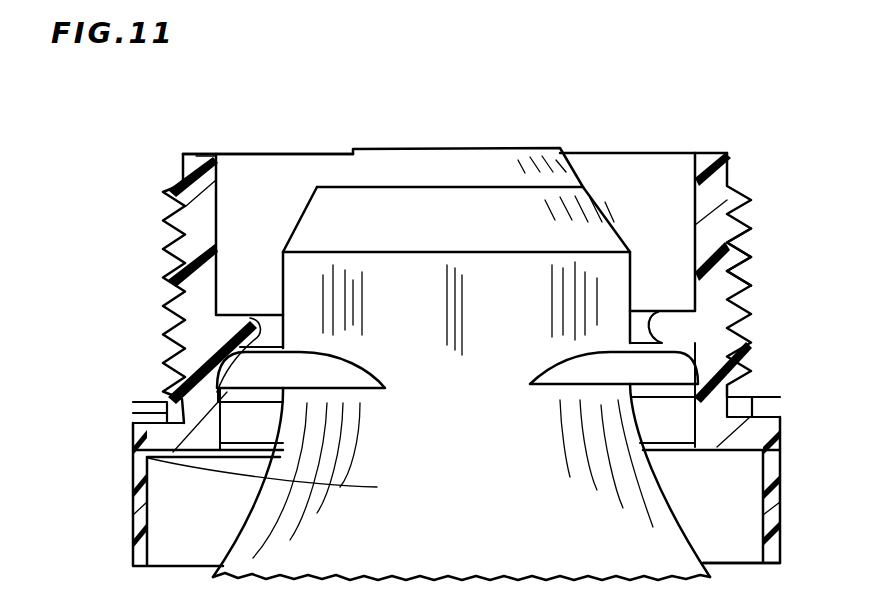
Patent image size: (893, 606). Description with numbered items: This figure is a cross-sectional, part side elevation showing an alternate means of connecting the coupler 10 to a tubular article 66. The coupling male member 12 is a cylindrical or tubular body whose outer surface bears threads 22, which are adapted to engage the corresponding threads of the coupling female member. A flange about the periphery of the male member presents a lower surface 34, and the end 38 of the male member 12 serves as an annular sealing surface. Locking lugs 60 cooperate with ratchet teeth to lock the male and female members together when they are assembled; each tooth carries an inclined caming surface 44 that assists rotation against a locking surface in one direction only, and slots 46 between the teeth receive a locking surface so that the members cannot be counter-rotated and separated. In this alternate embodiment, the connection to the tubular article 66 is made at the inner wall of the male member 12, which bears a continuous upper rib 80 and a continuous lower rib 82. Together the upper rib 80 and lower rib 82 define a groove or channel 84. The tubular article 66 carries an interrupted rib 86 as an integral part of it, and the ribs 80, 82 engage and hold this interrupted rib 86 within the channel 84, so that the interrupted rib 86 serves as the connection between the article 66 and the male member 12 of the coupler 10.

The coupler 10 is at (727, 91).
The coupling male member 12 is at (141, 244).
The threads 22 is at (746, 270).
The lower surface 34 is at (782, 568).
The end 38 is at (206, 158).
The inclined caming surface 44 is at (140, 404).
The slots 46 is at (770, 398).
The locking lugs 60 is at (763, 432).
The tubular article 66 is at (220, 452).
The upper rib 80 is at (252, 332).
The lower rib 82 is at (230, 393).
The channel 84 is at (690, 362).
The interrupted rib 86 is at (586, 378).